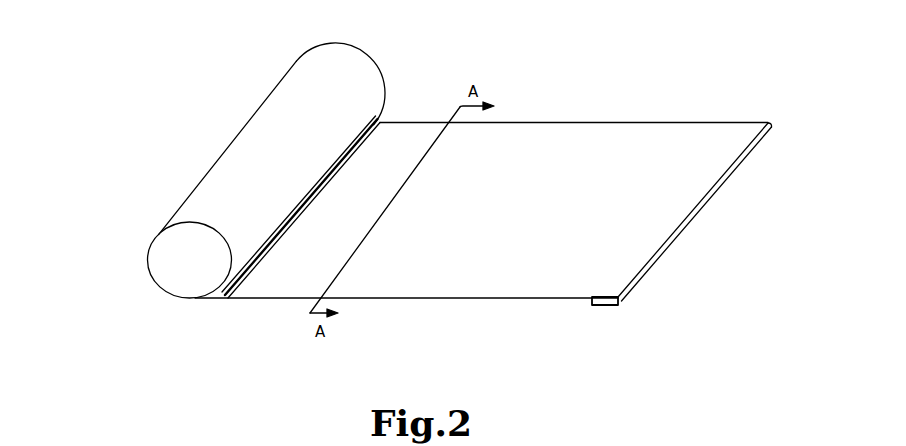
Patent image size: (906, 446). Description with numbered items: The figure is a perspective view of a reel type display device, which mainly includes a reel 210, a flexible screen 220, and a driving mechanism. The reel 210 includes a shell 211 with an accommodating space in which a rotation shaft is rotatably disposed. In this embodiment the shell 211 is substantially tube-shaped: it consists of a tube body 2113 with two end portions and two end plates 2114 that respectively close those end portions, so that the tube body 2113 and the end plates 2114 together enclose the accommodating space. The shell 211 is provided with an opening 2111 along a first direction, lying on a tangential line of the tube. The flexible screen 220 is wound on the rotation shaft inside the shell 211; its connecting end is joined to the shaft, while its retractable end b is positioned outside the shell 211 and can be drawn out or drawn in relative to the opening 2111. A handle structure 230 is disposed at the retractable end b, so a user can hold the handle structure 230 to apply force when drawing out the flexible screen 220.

The reel 210 is at (211, 162).
The shell 211 is at (164, 184).
The tube body 2113 is at (196, 201).
The end plates 2114 is at (182, 257).
The opening 2111 is at (264, 270).
The flexible screen 220 is at (487, 215).
The handle structure 230 is at (600, 307).
The retractable end b is at (739, 116).